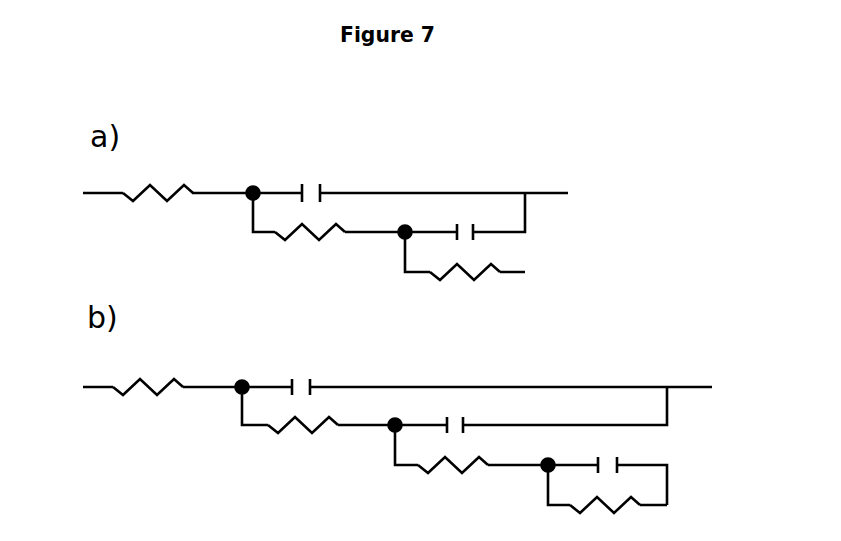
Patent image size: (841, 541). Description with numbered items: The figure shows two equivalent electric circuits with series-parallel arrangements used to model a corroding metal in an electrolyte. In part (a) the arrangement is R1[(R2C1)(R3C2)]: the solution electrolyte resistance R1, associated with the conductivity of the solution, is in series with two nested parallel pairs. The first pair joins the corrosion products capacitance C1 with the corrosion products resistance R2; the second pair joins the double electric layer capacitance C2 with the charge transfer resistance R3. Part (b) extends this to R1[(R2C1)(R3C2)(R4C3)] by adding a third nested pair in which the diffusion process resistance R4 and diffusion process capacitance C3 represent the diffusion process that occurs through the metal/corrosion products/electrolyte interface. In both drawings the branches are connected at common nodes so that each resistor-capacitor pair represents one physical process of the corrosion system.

The solution electrolyte resistance R1 is at (153, 282).
The corrosion products capacitance C1 is at (306, 281).
The corrosion products resistance R2 is at (306, 320).
The double electric layer capacitance C2 is at (460, 321).
The charge transfer resistance R3 is at (459, 360).
The diffusion process capacitance C3 is at (607, 457).
The diffusion process resistance R4 is at (605, 496).